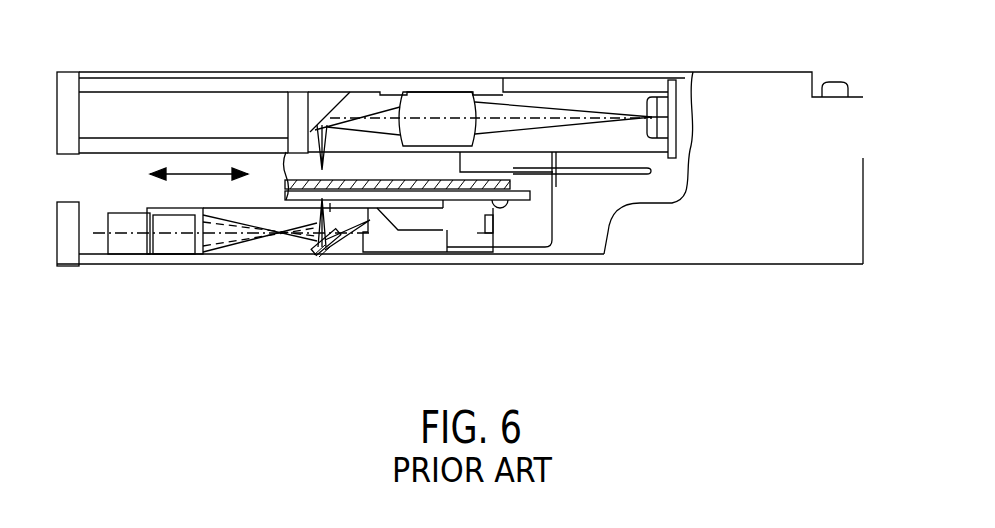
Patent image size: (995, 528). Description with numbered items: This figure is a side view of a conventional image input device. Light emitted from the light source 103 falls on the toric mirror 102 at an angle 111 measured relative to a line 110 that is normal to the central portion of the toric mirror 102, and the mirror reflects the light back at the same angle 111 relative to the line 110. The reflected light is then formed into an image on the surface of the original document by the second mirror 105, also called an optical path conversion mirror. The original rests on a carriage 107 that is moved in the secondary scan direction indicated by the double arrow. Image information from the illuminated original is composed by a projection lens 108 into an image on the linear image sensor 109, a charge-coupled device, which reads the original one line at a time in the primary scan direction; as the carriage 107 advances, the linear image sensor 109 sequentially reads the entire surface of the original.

The toric mirror 102 is at (193, 240).
The light source 103 is at (415, 245).
The second mirror 105 is at (322, 257).
The carriage 107 is at (363, 170).
The projection lens 108 is at (441, 100).
The linear image sensor 109 is at (657, 97).
The line normal to central portion of mirror 110 is at (127, 233).
The angle 111 is at (258, 233).